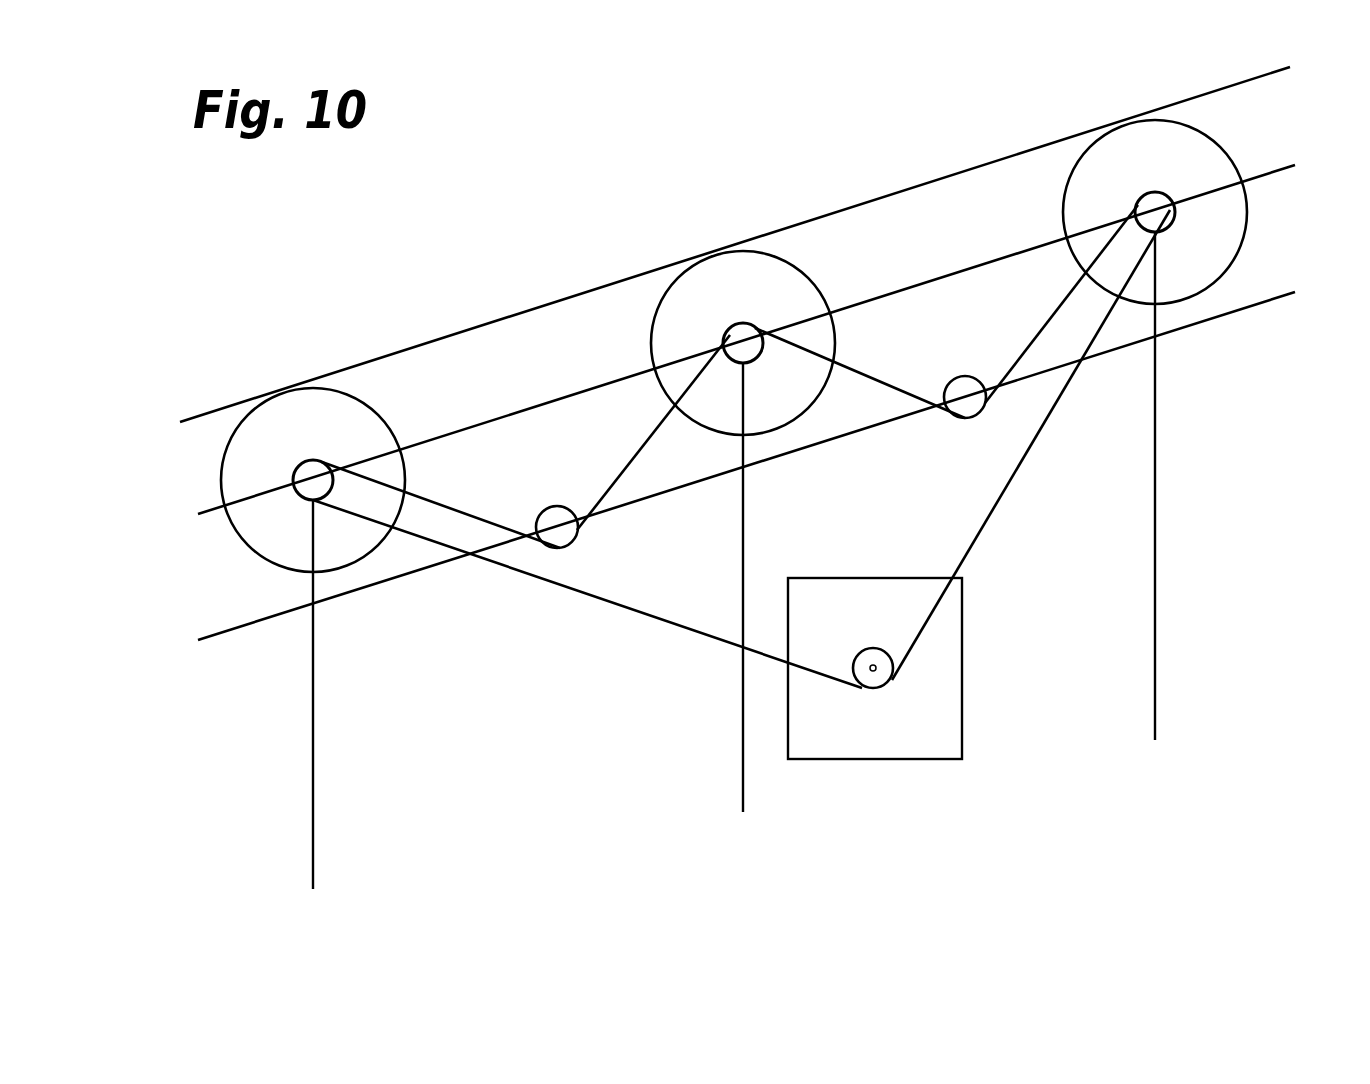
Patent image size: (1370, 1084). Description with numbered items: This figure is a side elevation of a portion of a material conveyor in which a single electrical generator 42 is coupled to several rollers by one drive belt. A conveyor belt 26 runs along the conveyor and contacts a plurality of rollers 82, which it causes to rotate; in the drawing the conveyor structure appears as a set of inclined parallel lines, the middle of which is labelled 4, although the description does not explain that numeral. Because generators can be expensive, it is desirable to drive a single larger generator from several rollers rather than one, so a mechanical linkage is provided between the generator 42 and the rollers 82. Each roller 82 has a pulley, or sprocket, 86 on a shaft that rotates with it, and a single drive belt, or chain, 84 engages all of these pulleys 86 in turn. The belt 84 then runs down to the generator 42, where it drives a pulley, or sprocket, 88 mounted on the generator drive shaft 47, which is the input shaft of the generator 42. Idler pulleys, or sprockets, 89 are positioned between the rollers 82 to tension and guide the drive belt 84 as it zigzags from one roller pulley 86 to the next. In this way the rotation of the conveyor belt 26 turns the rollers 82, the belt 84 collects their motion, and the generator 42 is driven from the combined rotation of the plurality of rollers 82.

The conveyor belt 26 is at (899, 190).
The middle rail / track 4 is at (908, 287).
The roller 82 is at (345, 418).
The pulley 86 is at (302, 474).
The idler pulley 89 is at (562, 533).
The drive belt 84 is at (612, 605).
The generator 42 is at (952, 640).
The generator drive shaft 47 is at (866, 672).
The pulley 88 is at (872, 690).